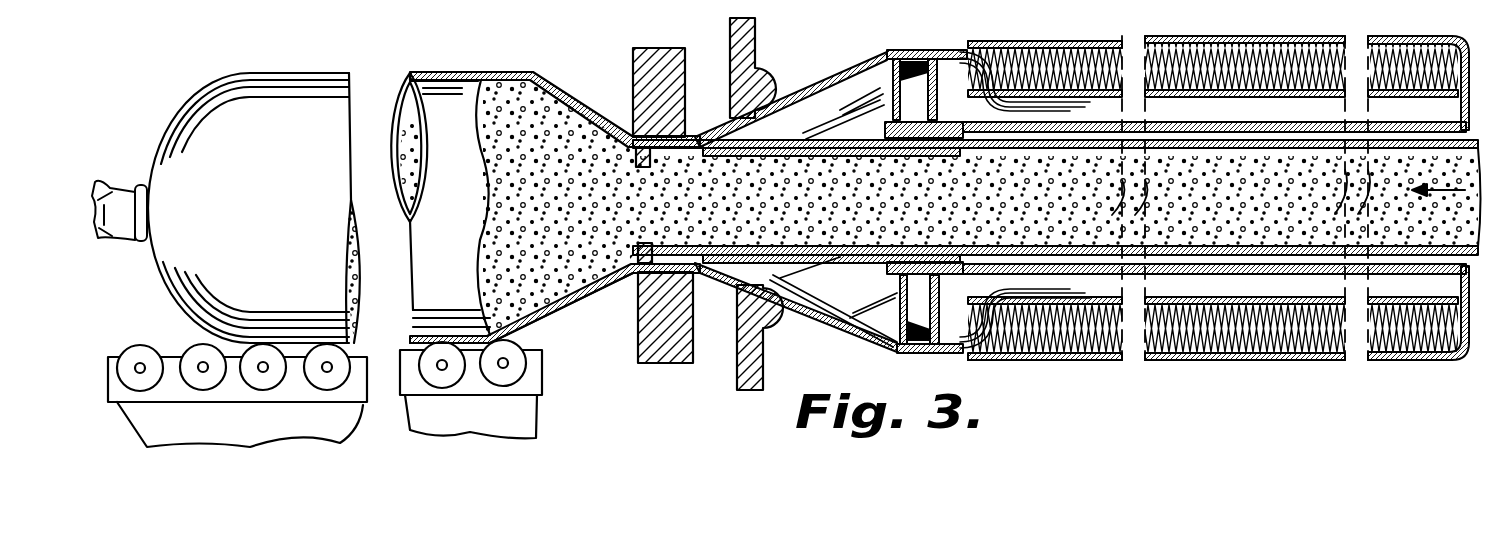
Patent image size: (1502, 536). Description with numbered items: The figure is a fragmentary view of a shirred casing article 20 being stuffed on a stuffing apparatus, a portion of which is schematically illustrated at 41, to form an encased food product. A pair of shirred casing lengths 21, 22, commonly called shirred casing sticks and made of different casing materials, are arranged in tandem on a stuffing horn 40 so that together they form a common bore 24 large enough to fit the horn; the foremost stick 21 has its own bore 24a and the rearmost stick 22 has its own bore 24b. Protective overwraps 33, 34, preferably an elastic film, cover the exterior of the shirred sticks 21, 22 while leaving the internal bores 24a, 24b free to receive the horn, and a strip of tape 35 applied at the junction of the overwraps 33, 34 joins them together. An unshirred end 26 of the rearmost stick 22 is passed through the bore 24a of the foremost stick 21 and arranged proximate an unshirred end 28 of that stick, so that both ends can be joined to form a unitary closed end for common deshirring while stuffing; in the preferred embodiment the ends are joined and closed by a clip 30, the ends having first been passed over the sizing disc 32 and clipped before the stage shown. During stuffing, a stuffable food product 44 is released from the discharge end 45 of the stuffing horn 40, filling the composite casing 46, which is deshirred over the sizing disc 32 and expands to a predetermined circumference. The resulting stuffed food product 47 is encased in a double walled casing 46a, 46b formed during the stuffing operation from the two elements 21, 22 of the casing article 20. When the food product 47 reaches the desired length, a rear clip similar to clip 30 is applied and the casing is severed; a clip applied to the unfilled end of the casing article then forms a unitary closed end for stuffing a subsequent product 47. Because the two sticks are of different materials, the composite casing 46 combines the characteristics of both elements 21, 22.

The shirred casing article 20 is at (1077, 372).
The foremost shirred casing length 21 is at (1018, 357).
The rearmost shirred casing length 22 is at (1407, 357).
The common bore 24 is at (1420, 105).
The bore of the foremost stick 24a is at (1040, 86).
The bore of the rear stick 24b is at (1247, 45).
The unshirred end of the rearmost stick 26 is at (587, 300).
The unshirred end of the foremost stick 28 is at (588, 316).
The clip 30 is at (136, 182).
The sizing disc 32 is at (922, 88).
The protective overwrap of the foremost stick 33 is at (1170, 360).
The protective overwrap of the rear stick 34 is at (1380, 360).
The strip of tape 35 is at (1270, 357).
The stuffing horn 40 is at (823, 140).
The stuffing apparatus 41 is at (785, 392).
The stuffable food product 44 is at (566, 205).
The discharge end 45 is at (640, 175).
The composite casing 46 is at (460, 80).
The first casing wall 46a is at (399, 82).
The second casing wall 46b is at (393, 130).
The stuffed food product 47 is at (238, 107).